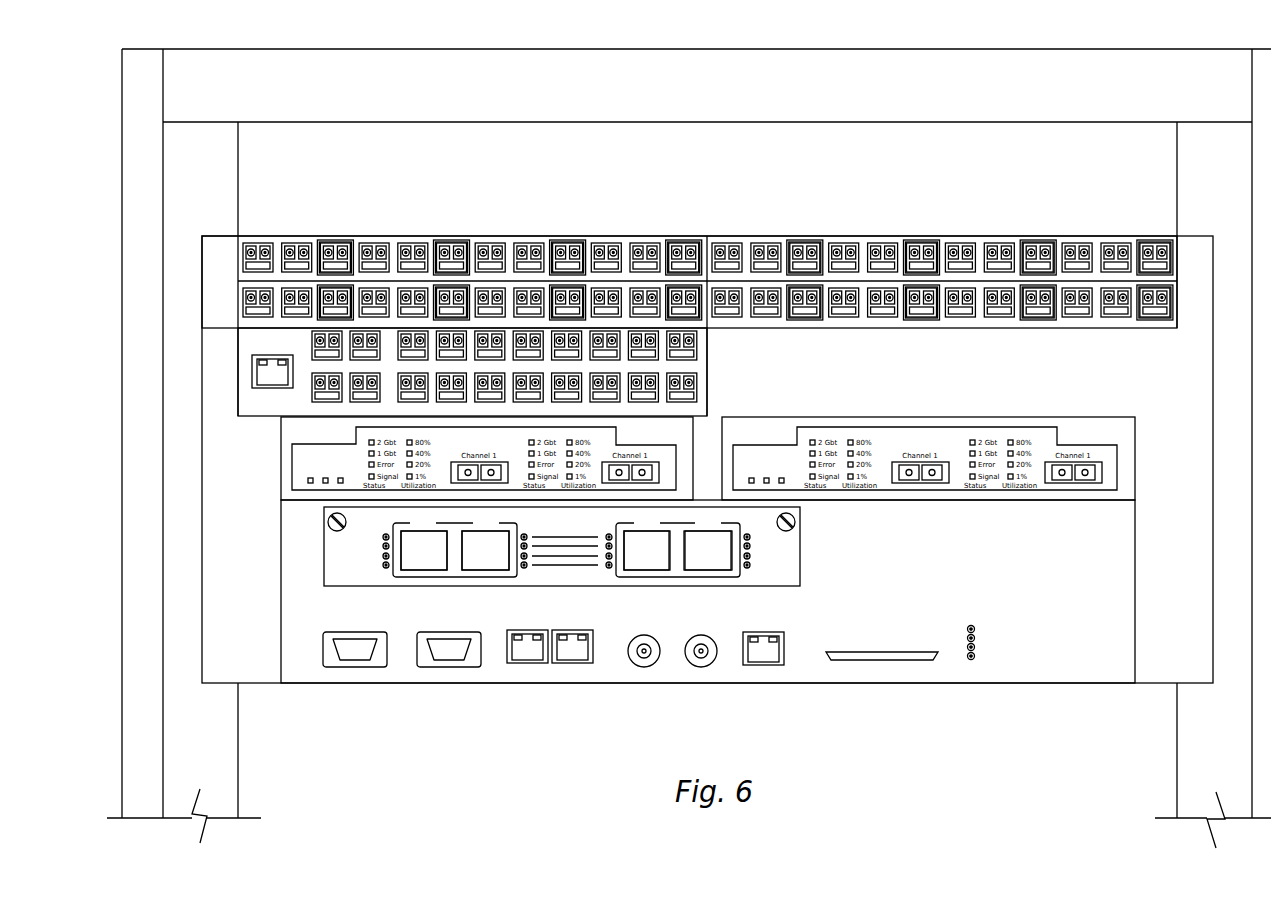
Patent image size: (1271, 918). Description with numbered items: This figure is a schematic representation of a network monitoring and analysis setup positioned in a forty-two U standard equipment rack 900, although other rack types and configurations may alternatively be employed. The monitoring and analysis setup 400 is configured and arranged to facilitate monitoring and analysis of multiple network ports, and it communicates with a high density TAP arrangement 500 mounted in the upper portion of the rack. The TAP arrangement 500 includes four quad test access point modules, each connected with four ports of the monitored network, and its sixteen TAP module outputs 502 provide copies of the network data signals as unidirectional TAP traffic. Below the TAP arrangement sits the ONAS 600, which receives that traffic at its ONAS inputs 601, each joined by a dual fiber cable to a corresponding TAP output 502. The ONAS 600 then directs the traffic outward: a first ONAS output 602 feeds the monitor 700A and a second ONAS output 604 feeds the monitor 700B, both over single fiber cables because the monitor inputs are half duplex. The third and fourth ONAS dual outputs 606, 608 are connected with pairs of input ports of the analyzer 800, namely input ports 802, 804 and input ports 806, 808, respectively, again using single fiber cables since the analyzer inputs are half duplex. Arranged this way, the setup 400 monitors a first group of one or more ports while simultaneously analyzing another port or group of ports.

The equipment rack 900 is at (946, 43).
The monitoring and analysis setup 400 is at (118, 328).
The high density TAP arrangement 500 is at (668, 229).
The TAP module output 502 is at (335, 242).
The ONAS 600 is at (708, 363).
The ONAS input 601 is at (698, 390).
The first ONAS output 602 is at (381, 346).
The second ONAS output 604 is at (380, 389).
The third ONAS dual output 606 is at (312, 347).
The fourth ONAS dual output 608 is at (312, 390).
The monitor 700A is at (281, 481).
The monitor 700B is at (1135, 462).
The analyzer 800 is at (1135, 635).
The analyzer input port 802 is at (410, 571).
The analyzer input port 804 is at (495, 571).
The analyzer input port 806 is at (630, 571).
The analyzer input port 808 is at (723, 571).